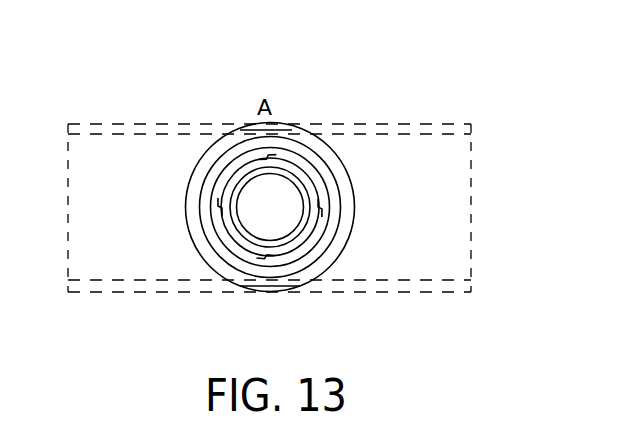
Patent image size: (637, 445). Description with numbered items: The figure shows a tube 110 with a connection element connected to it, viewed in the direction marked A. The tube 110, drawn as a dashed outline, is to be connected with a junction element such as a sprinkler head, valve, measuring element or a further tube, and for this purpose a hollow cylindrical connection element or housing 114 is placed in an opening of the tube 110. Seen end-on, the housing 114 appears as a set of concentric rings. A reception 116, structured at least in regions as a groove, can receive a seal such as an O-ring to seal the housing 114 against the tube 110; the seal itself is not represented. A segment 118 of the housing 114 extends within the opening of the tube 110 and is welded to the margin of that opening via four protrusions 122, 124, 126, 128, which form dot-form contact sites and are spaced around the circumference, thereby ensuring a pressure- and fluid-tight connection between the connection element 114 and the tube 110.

The tube 110 is at (471, 127).
The connection element 114 is at (215, 145).
The reception 116 is at (317, 252).
The segment 118 is at (303, 222).
The protrusion 122 is at (317, 208).
The protrusion 124 is at (267, 157).
The protrusion 126 is at (218, 205).
The protrusion 128 is at (266, 256).